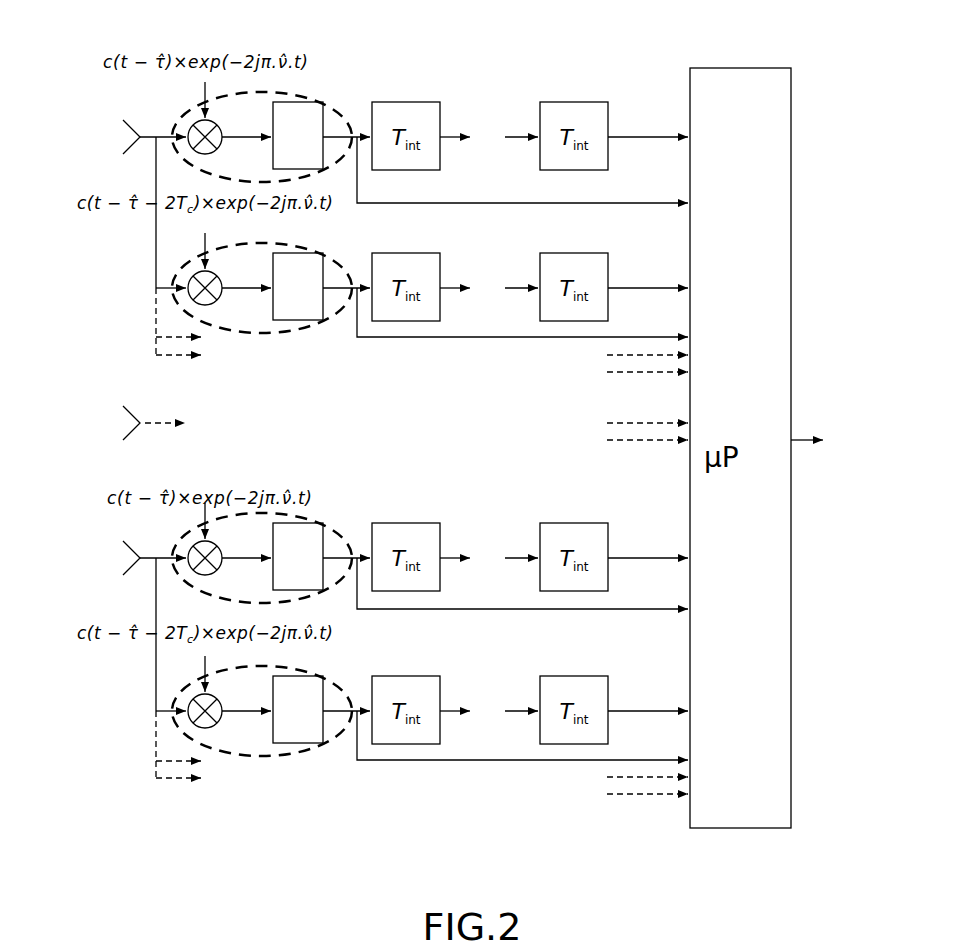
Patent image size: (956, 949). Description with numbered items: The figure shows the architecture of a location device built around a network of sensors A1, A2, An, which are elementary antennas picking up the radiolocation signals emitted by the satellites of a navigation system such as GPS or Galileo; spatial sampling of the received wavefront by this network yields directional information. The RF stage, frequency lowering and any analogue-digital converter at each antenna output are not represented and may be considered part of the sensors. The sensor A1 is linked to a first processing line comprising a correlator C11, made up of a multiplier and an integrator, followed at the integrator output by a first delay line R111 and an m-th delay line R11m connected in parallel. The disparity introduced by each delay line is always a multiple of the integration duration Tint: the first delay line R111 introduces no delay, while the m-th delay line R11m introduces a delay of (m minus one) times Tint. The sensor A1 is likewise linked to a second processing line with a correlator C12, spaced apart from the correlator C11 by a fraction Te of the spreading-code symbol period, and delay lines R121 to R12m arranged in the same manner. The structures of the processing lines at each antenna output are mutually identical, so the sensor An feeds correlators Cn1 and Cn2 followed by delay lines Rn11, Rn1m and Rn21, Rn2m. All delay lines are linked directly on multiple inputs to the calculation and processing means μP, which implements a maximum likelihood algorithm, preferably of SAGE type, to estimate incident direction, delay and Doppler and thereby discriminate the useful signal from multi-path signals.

The sensor A1 is at (127, 139).
The sensor A2 is at (123, 426).
The sensor An is at (130, 556).
The correlator C11 is at (278, 97).
The correlator C12 is at (274, 314).
The correlator Cn1 is at (271, 509).
The correlator Cn2 is at (276, 739).
The m-th delay line R11m is at (640, 94).
The first delay line R111 is at (522, 170).
The m-th delay line R12m is at (647, 260).
The first delay line R121 is at (522, 337).
The m-th delay line Rn1m is at (640, 526).
The first delay line Rn11 is at (522, 601).
The m-th delay line Rn2m is at (648, 685).
The first delay line Rn21 is at (522, 763).